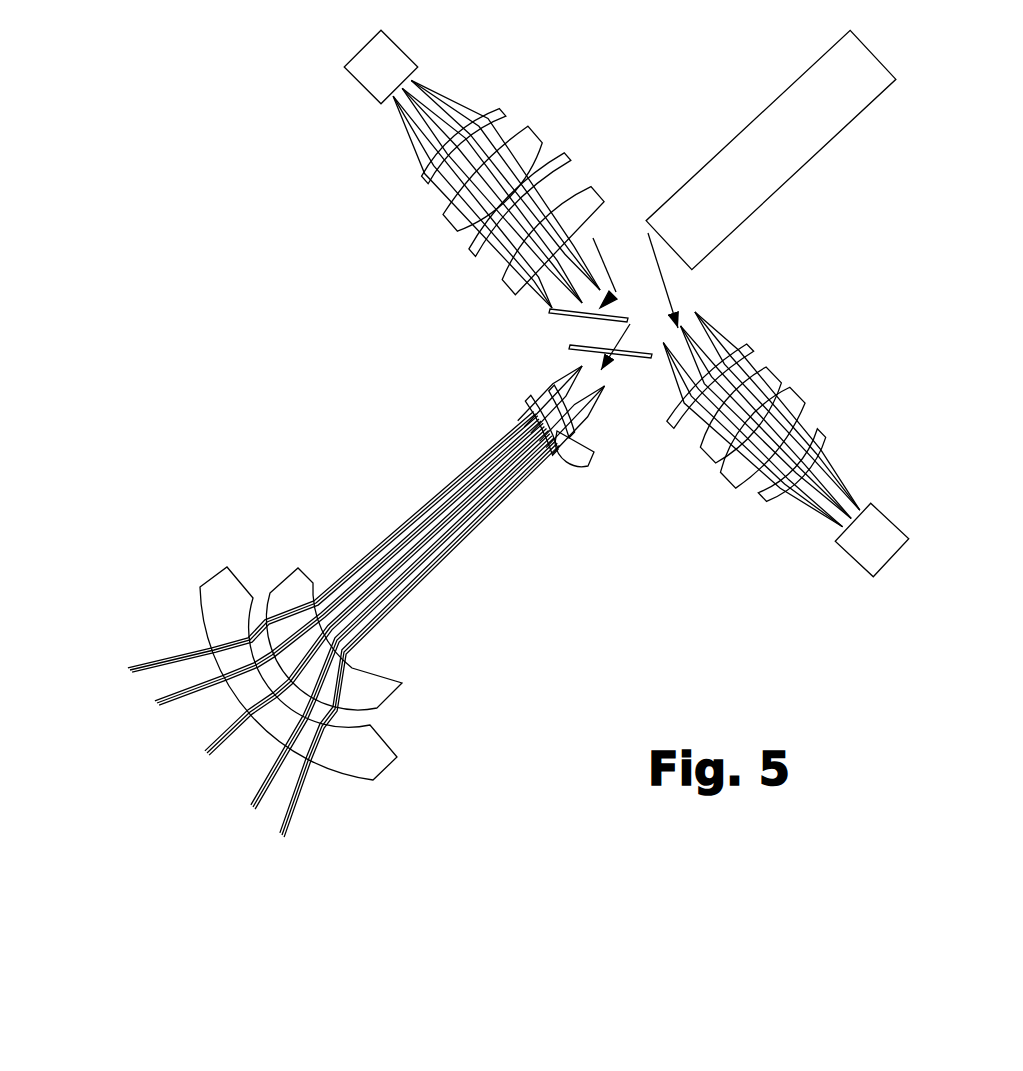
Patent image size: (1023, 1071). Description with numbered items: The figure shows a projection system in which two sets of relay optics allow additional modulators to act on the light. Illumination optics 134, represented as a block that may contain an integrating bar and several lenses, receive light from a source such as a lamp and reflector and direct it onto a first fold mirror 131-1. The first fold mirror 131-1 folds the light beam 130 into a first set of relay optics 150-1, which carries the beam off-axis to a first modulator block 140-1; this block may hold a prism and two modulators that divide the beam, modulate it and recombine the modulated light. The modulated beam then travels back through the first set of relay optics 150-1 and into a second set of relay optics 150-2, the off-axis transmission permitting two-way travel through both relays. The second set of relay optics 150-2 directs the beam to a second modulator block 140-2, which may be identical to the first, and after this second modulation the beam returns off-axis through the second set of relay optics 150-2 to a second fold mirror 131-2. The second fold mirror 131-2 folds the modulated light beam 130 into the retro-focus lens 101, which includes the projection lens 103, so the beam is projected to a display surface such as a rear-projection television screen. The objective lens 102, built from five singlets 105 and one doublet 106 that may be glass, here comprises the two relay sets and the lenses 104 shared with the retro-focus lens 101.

The retro-focus lens 101 is at (404, 702).
The objective lens 102 is at (513, 373).
The projection lens 103 is at (287, 580).
The lenses 104 is at (556, 389).
The singlets 105 is at (493, 117).
The doublet 106 is at (520, 133).
The light beam 130 is at (438, 550).
The first fold mirror 131-1 is at (630, 319).
The second fold mirror 131-2 is at (634, 357).
The illumination optics 134 is at (767, 152).
The first modulator block 140-1 is at (368, 69).
The second modulator block 140-2 is at (874, 536).
The first set of relay optics 150-1 is at (437, 233).
The second set of relay optics 150-2 is at (753, 517).